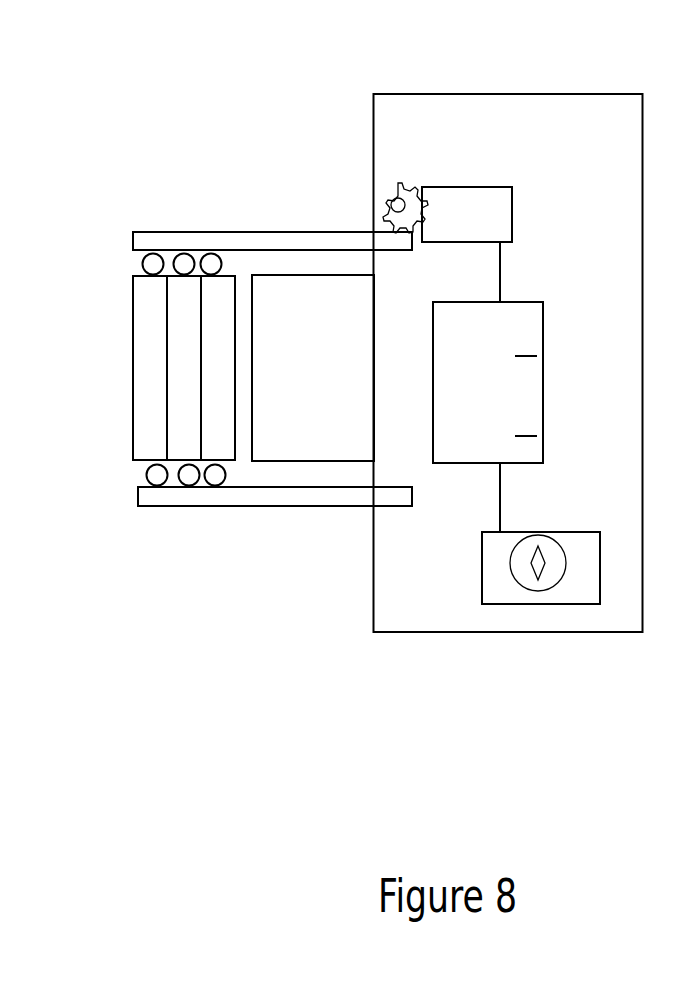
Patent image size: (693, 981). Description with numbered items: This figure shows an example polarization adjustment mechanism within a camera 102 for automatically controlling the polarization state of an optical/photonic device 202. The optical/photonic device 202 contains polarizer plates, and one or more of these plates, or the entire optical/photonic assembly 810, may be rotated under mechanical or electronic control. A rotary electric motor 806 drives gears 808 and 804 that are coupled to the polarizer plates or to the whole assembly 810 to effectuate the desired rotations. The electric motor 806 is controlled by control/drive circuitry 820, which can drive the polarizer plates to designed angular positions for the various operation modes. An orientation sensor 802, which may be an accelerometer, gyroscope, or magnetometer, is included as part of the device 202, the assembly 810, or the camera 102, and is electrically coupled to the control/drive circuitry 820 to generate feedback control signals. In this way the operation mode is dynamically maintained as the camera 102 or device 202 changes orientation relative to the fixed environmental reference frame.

The camera 102 is at (556, 95).
The optical/photonic device 202 is at (132, 375).
The orientation sensor 802 is at (568, 531).
The gears 804 is at (128, 253).
The rotary electric motor 806 is at (480, 186).
The gears 808 is at (399, 168).
The optical/photonic assembly 810 is at (246, 205).
The control/drive circuitry 820 is at (472, 301).